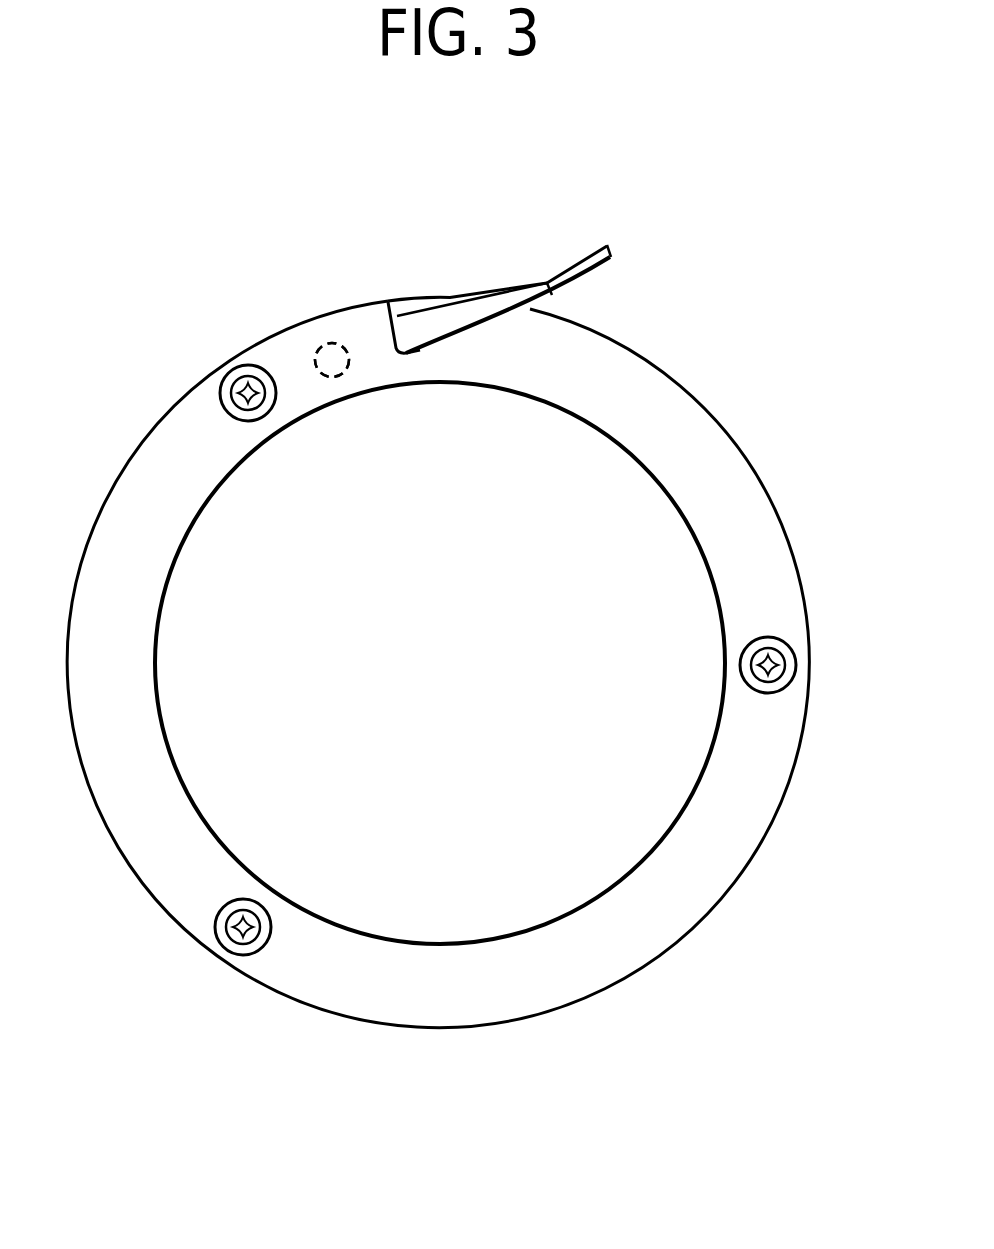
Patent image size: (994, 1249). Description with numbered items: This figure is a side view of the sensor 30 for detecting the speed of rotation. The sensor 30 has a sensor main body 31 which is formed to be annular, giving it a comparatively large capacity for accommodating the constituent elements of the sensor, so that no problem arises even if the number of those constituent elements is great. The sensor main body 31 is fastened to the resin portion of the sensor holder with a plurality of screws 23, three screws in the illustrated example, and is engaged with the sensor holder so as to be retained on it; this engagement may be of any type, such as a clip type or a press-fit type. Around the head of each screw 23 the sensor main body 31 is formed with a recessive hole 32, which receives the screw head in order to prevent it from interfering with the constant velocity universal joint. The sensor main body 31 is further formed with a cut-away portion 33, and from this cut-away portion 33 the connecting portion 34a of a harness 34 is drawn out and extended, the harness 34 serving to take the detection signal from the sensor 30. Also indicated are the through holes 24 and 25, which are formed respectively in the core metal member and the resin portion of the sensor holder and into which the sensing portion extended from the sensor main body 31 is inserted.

The screw 23 is at (259, 366).
The through hole 24 is at (360, 436).
The through hole 25 is at (346, 369).
The sensor for detecting the speed of rotation 30 is at (342, 815).
The sensor main body 31 is at (450, 957).
The recessive hole 32 is at (260, 420).
The cut-away portion 33 is at (469, 332).
The harness 34 is at (577, 267).
The connecting portion 34a is at (430, 323).